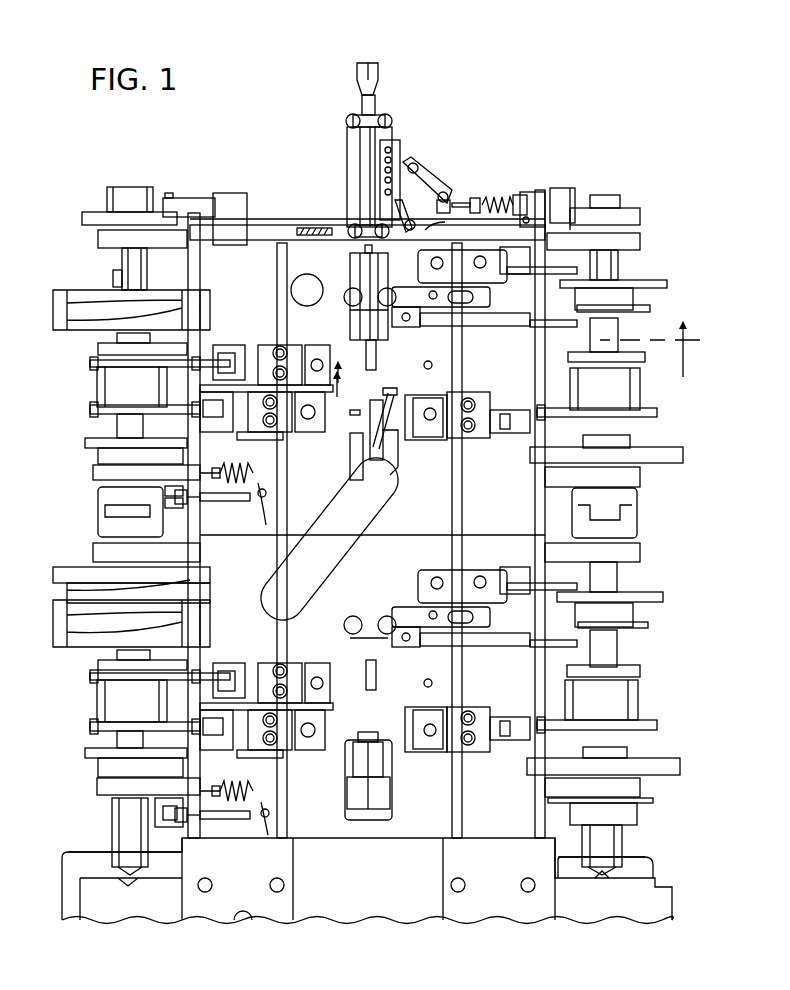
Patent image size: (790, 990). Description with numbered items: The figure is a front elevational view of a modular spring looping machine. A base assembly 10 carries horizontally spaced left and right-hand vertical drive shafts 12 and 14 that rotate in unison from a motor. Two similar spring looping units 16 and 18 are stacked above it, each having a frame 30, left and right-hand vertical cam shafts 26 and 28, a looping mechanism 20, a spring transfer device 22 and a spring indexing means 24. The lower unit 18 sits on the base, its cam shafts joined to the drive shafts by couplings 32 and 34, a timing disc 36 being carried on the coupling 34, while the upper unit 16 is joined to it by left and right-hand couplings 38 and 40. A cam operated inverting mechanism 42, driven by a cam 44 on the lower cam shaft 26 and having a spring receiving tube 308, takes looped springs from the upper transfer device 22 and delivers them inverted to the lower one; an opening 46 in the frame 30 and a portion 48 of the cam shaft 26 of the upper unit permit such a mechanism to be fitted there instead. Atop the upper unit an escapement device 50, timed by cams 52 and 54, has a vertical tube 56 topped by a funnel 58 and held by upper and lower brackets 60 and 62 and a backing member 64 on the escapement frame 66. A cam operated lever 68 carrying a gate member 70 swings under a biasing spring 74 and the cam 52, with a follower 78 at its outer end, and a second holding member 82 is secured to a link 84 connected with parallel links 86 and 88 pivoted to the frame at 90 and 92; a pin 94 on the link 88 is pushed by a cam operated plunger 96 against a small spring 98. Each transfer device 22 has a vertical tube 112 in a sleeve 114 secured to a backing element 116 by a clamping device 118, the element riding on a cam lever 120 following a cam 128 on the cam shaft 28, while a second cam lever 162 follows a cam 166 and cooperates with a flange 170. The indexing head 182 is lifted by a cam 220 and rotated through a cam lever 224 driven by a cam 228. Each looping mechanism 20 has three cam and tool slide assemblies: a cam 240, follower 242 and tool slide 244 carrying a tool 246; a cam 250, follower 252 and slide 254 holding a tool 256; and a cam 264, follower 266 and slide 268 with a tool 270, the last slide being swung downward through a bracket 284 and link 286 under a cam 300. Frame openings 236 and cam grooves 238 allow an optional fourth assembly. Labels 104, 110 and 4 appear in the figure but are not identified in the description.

The base assembly 10 is at (672, 875).
The left-hand vertical drive shaft 12 is at (105, 852).
The right-hand vertical drive shaft 14 is at (618, 860).
The first spring looping unit 16 is at (674, 400).
The second spring looping unit 18 is at (668, 680).
The looping mechanism 20 is at (270, 343).
The spring transfer device 22 is at (483, 330).
The spring indexing means 24 is at (343, 452).
The left-hand vertical cam shaft 26 is at (117, 337).
The right-hand vertical cam shaft 28 is at (618, 266).
The frame 30 is at (443, 528).
The coupling 32 is at (112, 818).
The coupling 34 is at (622, 840).
The timing disc 36 is at (653, 800).
The left-hand coupling 38 is at (98, 496).
The right-hand coupling 40 is at (632, 500).
The inverting mechanism 42 is at (402, 478).
The cam 44 is at (53, 574).
The opening 46 is at (297, 275).
The portion of cam shaft 48 is at (113, 278).
The escapement device 50 is at (435, 162).
The cam 52 is at (82, 218).
The cam 54 is at (640, 216).
The vertical tube 56 is at (362, 180).
The funnel 58 is at (357, 68).
The upper bracket 60 is at (374, 108).
The lower bracket 62 is at (373, 248).
The backing member 64 is at (347, 155).
The frame 66 is at (298, 222).
The cam operated lever 68 is at (198, 200).
The gate member 70 is at (350, 258).
The biasing spring 74 is at (330, 226).
The follower 78 is at (169, 193).
The second member 82 is at (414, 226).
The link 84 is at (418, 168).
The link 86 is at (450, 203).
The link 88 is at (448, 192).
The pivot 90 is at (448, 222).
The pivot 92 is at (400, 165).
The pin 94 is at (478, 198).
The cam operated plunger 96 is at (522, 193).
The small spring 98 is at (495, 212).
The bracket 104 is at (570, 195).
The stop 110 is at (518, 213).
The vertical tube 112 is at (378, 355).
The sleeve 114 is at (352, 316).
The backing element 116 is at (352, 332).
The clamping device 118 is at (342, 297).
The cam lever 120 is at (444, 268).
The cam 128 is at (667, 285).
The cam lever 162 is at (440, 328).
The cam 166 is at (650, 309).
The flange 170 is at (415, 312).
The indexing head 182 is at (385, 758).
The cam 220 is at (53, 302).
The cam lever 224 is at (563, 433).
The cam 228 is at (683, 455).
The frame openings 236 is at (432, 366).
The cam grooves 238 is at (640, 372).
The cam 240 is at (90, 363).
The follower 242 is at (216, 345).
The tool slide 244 is at (230, 395).
The tool 246 is at (335, 700).
The cam 250 is at (657, 414).
The follower 252 is at (518, 435).
The slide 254 is at (482, 430).
The tool 256 is at (410, 395).
The cam 264 is at (90, 409).
The follower 266 is at (210, 417).
The slide 268 is at (226, 624).
The tool 270 is at (340, 718).
The bracket 284 is at (270, 505).
The link 286 is at (240, 501).
The cam 300 is at (85, 443).
The spring receiving tube 308 is at (388, 388).
The section line 4 is at (516, 368).